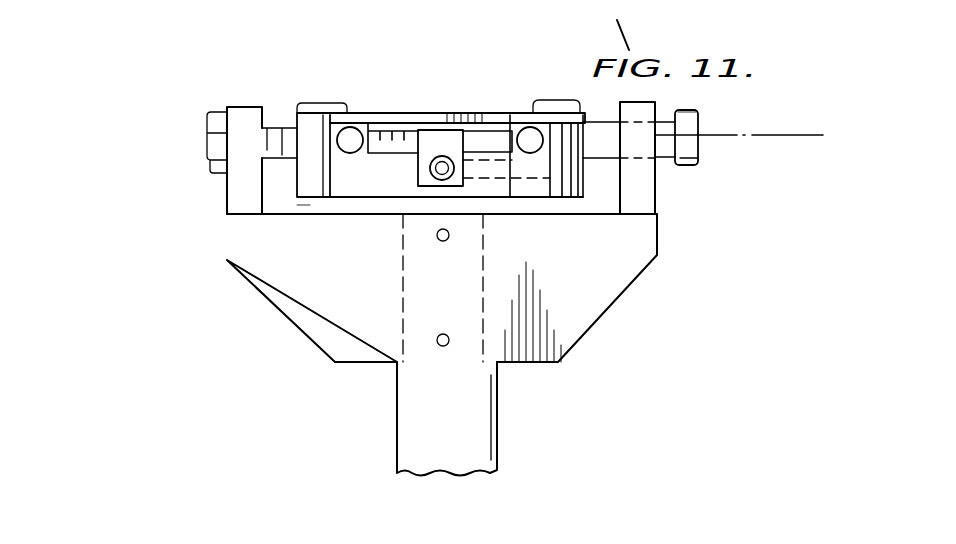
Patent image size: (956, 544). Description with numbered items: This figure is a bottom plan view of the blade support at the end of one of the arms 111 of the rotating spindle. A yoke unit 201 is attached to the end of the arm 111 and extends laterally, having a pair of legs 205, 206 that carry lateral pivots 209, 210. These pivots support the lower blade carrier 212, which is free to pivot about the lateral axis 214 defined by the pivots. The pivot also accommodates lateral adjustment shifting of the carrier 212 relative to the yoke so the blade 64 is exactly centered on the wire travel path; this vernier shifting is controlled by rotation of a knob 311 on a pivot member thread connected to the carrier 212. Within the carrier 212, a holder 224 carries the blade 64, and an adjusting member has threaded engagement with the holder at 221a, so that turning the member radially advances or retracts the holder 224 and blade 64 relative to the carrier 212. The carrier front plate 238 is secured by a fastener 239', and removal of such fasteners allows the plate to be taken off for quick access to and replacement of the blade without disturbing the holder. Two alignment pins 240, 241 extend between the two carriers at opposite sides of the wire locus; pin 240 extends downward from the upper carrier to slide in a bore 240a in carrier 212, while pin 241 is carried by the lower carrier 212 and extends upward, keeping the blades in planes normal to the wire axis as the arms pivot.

The yoke unit 201 is at (277, 318).
The leg 205 is at (232, 200).
The lateral pivot 209 is at (207, 135).
The fastener 239' is at (402, 132).
The pin 240 is at (350, 127).
The bore 240a is at (345, 153).
The lower blade carrier 212 is at (303, 210).
The carrier front plate 238 is at (377, 113).
The blade 64 is at (400, 147).
The holder 224 is at (437, 130).
The threaded engagement 221a is at (446, 180).
The pin 241 is at (527, 128).
The leg 206 is at (643, 190).
The lateral pivot 210 is at (663, 160).
The knob 311 is at (698, 122).
The lateral axis 214 is at (806, 137).
The arm 111 is at (497, 422).